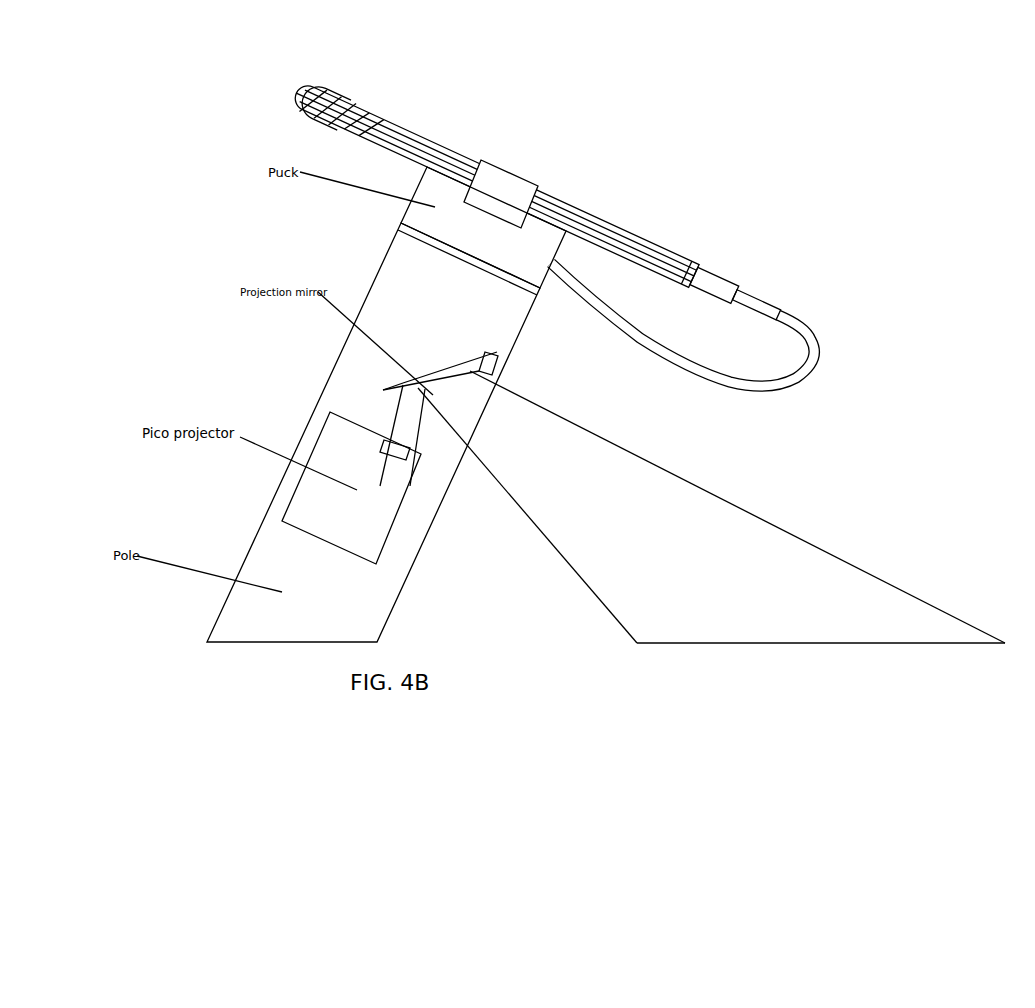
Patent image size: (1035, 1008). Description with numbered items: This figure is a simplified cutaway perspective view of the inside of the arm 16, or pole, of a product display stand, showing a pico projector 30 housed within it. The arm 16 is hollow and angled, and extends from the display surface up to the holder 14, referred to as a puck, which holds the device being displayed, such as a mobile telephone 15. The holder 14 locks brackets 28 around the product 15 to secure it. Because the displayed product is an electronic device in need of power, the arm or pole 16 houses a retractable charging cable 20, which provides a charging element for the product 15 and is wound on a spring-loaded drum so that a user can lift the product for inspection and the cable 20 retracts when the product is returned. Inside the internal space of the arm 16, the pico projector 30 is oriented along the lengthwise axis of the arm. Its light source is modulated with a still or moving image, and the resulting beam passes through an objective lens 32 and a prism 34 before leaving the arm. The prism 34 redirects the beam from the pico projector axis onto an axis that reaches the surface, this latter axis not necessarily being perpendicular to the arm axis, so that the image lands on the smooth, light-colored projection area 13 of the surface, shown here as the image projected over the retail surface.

The projection area 13 is at (660, 654).
The holder 14 is at (433, 193).
The mobile telephone 15 is at (300, 104).
The arm 16 is at (395, 255).
The retractable charging cable 20 is at (760, 303).
The brackets 28 is at (503, 183).
The pico projector 30 is at (317, 515).
The objective lens 32 is at (405, 418).
The prism 34 is at (420, 384).